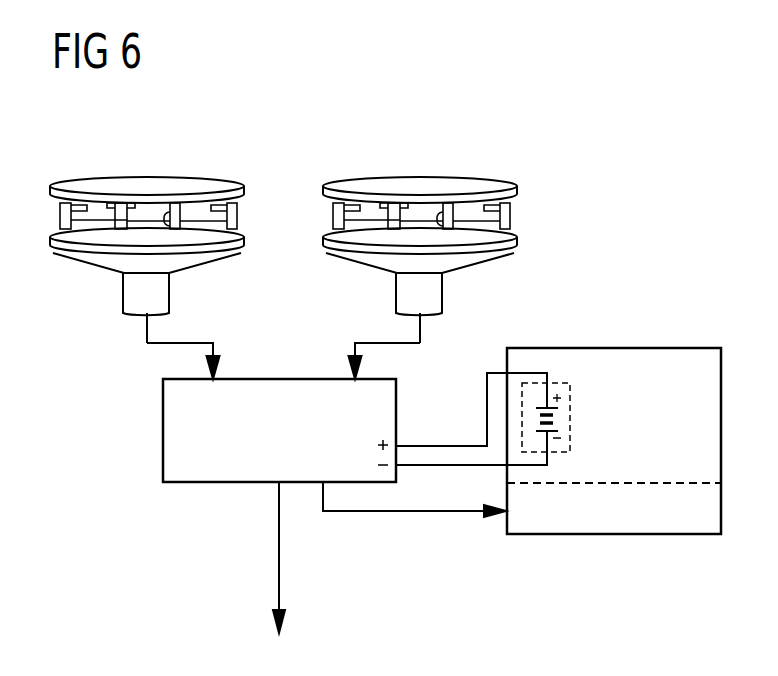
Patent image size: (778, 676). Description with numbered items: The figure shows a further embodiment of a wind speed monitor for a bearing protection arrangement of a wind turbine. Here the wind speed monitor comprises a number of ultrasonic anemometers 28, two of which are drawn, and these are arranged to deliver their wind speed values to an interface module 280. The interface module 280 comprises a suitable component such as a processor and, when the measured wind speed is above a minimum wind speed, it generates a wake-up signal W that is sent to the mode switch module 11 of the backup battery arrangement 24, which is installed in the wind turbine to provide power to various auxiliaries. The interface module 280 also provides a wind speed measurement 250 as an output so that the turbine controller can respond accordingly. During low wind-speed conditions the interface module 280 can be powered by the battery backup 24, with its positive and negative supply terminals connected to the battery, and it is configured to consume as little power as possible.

The ultrasonic anemometer 28 is at (148, 184).
The interface module 280 is at (210, 483).
The wind speed measurement 250 is at (281, 587).
The wake-up signal W is at (433, 513).
The backup battery arrangement 24 is at (666, 347).
The mode switch module 11 is at (687, 518).